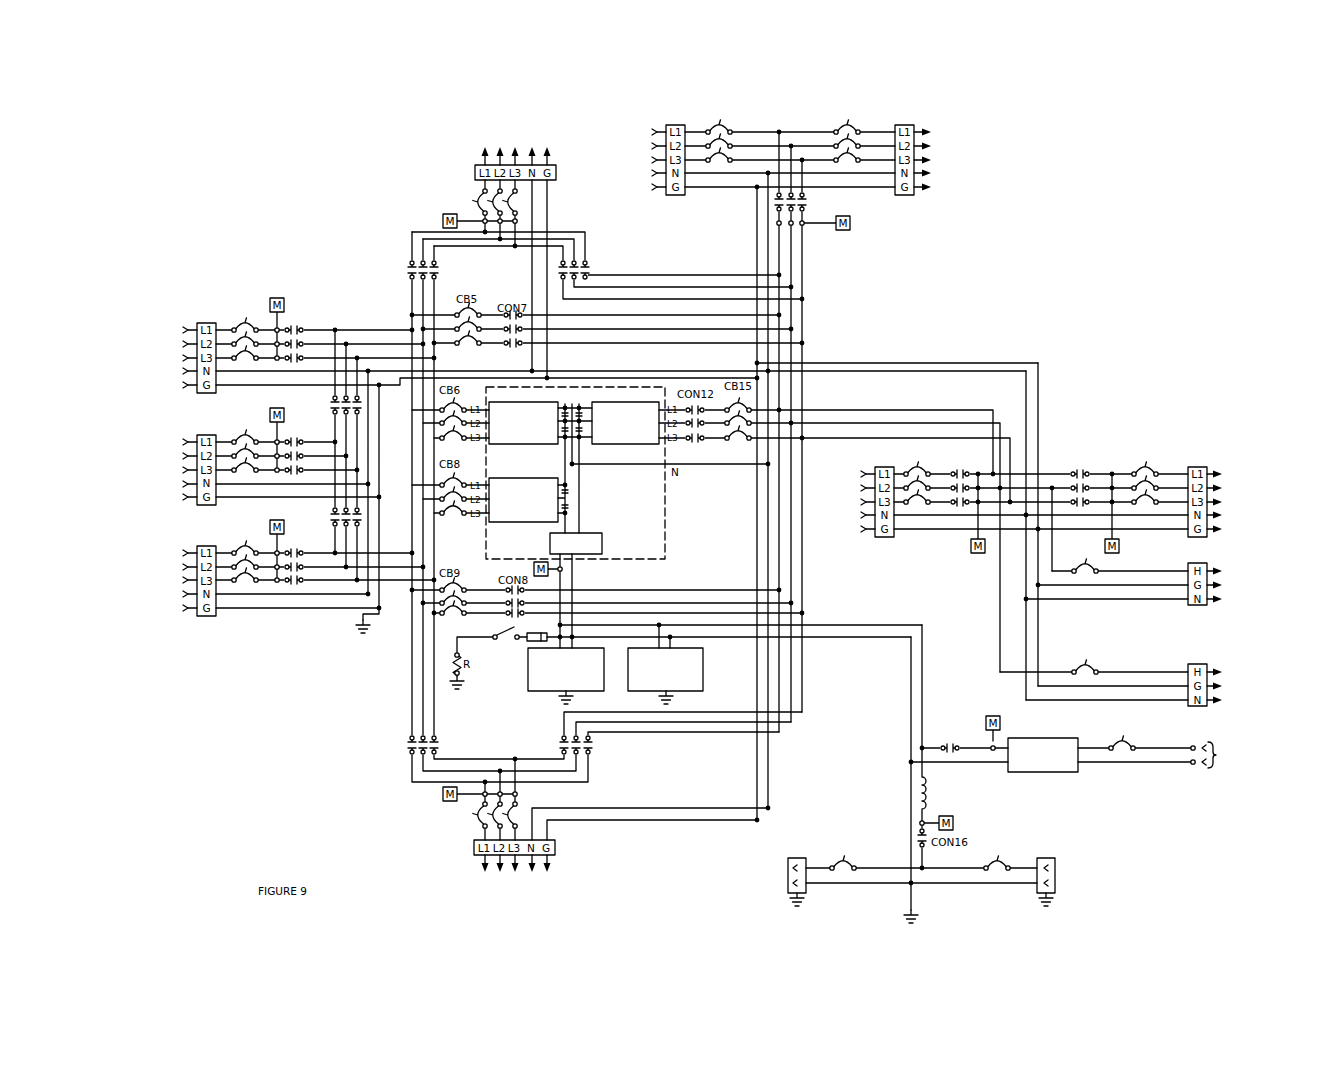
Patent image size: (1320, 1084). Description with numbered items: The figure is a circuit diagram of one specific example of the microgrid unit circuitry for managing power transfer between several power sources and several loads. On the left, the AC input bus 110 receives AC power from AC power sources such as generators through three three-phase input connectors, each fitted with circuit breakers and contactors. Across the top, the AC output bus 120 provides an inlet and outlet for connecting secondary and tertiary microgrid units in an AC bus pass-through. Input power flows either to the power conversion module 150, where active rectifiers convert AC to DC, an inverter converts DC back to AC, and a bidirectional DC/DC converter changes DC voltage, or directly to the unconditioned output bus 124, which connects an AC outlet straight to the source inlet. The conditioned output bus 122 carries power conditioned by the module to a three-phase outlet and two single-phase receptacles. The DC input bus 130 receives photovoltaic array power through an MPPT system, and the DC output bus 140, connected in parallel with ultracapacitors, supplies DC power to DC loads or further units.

The AC input bus 110 is at (361, 296).
The AC output bus 120 is at (744, 208).
The conditioned output bus 122 is at (1181, 423).
The unconditioned output bus 124 is at (451, 182).
The DC input bus 130 is at (1128, 778).
The DC output bus 140 is at (1068, 864).
The power conversion module 150 is at (680, 542).